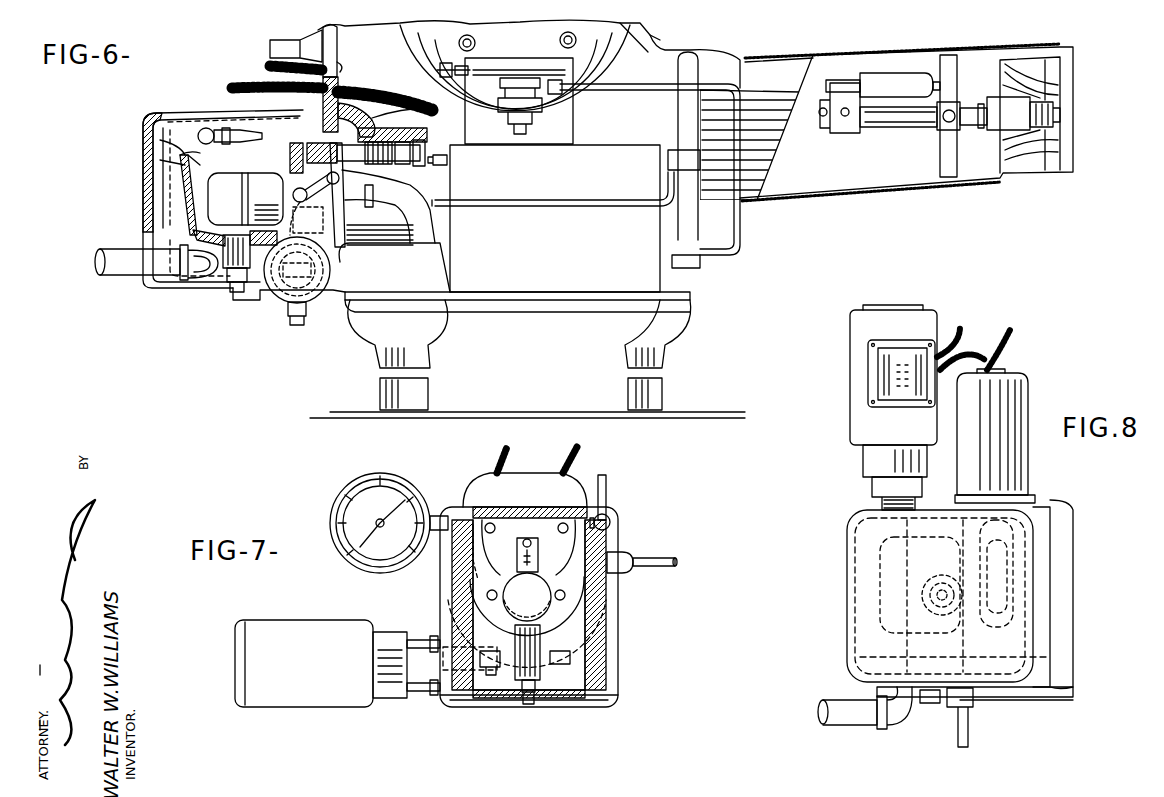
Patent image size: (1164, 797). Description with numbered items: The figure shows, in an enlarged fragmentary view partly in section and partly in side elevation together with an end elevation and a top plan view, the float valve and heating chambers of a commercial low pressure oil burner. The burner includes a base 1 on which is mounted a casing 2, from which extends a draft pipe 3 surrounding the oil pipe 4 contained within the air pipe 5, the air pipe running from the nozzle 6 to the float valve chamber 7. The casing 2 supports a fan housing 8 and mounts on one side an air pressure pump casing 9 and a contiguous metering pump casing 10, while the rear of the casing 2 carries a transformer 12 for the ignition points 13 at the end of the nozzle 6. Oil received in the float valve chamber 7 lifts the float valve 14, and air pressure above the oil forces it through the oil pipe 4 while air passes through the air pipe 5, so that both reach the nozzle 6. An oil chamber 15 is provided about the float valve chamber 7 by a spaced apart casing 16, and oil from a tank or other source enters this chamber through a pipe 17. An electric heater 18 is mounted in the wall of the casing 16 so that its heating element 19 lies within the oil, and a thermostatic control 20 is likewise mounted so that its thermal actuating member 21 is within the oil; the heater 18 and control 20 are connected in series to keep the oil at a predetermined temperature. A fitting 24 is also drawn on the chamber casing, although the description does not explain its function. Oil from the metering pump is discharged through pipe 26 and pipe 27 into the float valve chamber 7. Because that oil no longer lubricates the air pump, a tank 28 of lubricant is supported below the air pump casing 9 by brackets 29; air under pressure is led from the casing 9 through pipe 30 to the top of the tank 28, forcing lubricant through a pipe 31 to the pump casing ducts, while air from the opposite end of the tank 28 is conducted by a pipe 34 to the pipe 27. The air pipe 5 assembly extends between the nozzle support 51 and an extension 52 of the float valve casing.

In FIG. 6, the base 1 is at (533, 305).
In FIG. 6, the casing 2 is at (372, 243).
In FIG. 6, the draft pipe 3 is at (848, 200).
In FIG. 6, the oil pipe 4 is at (403, 144).
In FIG. 6, the air pipe 5 is at (876, 132).
In FIG. 6, the nozzle 6 is at (1052, 108).
In FIG. 6, the float valve chamber 7 is at (183, 170).
In FIG. 7, the float valve chamber 7 is at (540, 557).
In FIG. 8, the float valve chamber 7 is at (870, 568).
In FIG. 6, the fan housing 8 is at (648, 42).
In FIG. 6, the air pressure pump casing 9 is at (432, 42).
In FIG. 6, the metering pump casing 10 is at (724, 151).
In FIG. 6, the transformer 12 is at (283, 44).
In FIG. 6, the ignition points 13 is at (1048, 88).
In FIG. 6, the float valve 14 is at (216, 194).
In FIG. 7, the float valve 14 is at (547, 612).
In FIG. 6, the oil chamber 15 is at (162, 155).
In FIG. 7, the oil chamber 15 is at (440, 600).
In FIG. 8, the oil chamber 15 is at (850, 600).
In FIG. 6, the casing 16 is at (145, 130).
In FIG. 7, the casing 16 is at (620, 650).
In FIG. 8, the casing 16 is at (850, 617).
In FIG. 6, the pipe 17 is at (120, 280).
In FIG. 8, the pipe 17 is at (840, 725).
In FIG. 7, the electric heater 18 is at (403, 698).
In FIG. 8, the electric heater 18 is at (1030, 393).
In FIG. 6, the heating element 19 is at (268, 298).
In FIG. 7, the heating element 19 is at (564, 668).
In FIG. 8, the heating element 19 is at (1015, 585).
In FIG. 7, the thermostatic control 20 is at (315, 695).
In FIG. 8, the thermostatic control 20 is at (868, 424).
In FIG. 7, the thermal actuating member 21 is at (492, 672).
In FIG. 8, the thermal actuating member 21 is at (895, 625).
In FIG. 7, the valve 24 is at (648, 557).
In FIG. 8, the valve 24 is at (957, 721).
In FIG. 7, the pipe 26 is at (608, 480).
In FIG. 7, the pipe 27 is at (610, 520).
In FIG. 8, the pipe 27 is at (1038, 705).
In FIG. 6, the tank 28 is at (582, 290).
In FIG. 6, the brackets 29 is at (578, 133).
In FIG. 6, the pipe 30 is at (580, 196).
In FIG. 6, the pipe 31 is at (742, 98).
In FIG. 6, the pipe 34 is at (440, 168).
In FIG. 6, the nozzle support 51 is at (948, 158).
In FIG. 6, the extension 52 is at (367, 128).